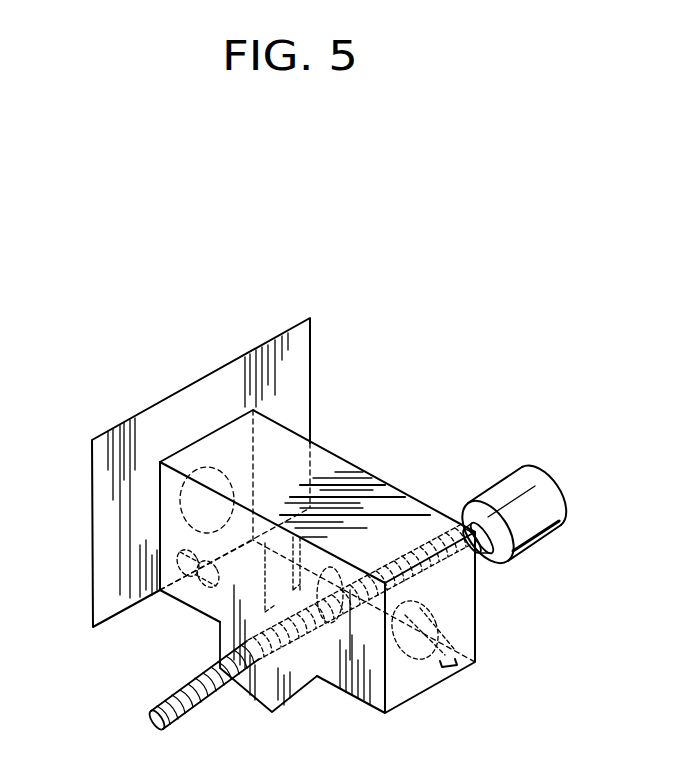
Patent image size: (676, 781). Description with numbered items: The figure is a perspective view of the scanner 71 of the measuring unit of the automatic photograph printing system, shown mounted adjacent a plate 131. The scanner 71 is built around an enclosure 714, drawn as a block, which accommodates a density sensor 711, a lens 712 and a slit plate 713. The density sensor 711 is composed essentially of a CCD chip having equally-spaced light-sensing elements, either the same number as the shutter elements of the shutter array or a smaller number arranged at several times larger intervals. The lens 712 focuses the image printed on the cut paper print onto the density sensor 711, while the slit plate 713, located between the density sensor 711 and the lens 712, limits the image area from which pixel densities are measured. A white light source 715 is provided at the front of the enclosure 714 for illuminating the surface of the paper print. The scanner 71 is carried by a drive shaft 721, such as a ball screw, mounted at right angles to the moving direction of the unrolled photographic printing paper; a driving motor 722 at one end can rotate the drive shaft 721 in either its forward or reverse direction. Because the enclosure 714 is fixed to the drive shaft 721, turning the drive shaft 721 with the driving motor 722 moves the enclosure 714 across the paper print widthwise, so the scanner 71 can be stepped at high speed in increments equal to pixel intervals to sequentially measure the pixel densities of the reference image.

The mounting plate 131 is at (285, 338).
The scanner 71 is at (420, 483).
The enclosure 714 is at (335, 465).
The lens 712 is at (180, 505).
The white light source 715 is at (180, 558).
The slit plate 713 is at (315, 590).
The density sensor 711 is at (427, 620).
The drive shaft 721 is at (203, 707).
The driving motor 722 is at (553, 513).